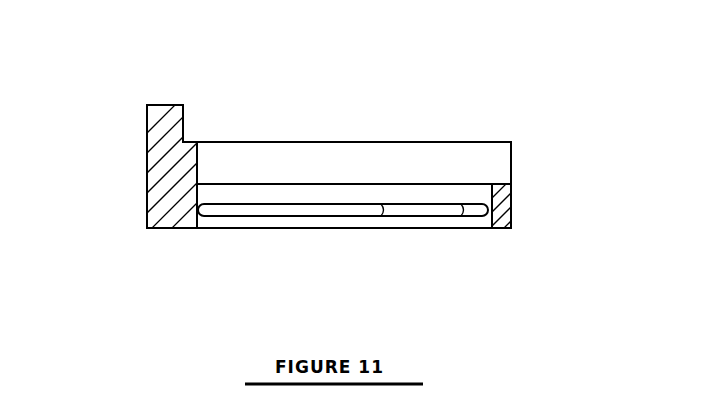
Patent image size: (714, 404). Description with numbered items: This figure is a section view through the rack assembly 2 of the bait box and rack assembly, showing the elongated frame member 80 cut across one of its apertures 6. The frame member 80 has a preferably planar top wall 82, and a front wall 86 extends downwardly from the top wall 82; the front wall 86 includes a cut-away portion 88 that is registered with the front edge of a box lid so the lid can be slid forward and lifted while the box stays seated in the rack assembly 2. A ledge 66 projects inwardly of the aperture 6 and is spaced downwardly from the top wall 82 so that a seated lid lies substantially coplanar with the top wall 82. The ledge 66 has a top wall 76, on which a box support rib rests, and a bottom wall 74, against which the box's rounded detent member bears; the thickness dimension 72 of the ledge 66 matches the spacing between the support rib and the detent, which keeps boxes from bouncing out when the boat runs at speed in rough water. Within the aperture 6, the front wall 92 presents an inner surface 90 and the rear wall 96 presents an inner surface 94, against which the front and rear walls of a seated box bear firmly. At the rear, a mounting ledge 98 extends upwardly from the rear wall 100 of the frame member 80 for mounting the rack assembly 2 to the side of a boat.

The rack assembly 2 is at (147, 117).
The aperture 6 is at (332, 162).
The ledge 66 is at (302, 210).
The thickness dimension 72 is at (467, 212).
The bottom wall 74 is at (255, 218).
The top wall 76 is at (402, 205).
The frame member 80 is at (513, 198).
The top wall 82 is at (268, 142).
The front wall 86 is at (513, 187).
The cut-away portion 88 is at (506, 153).
The inner surface 90 is at (490, 222).
The front wall 92 is at (503, 228).
The inner surface 94 is at (198, 228).
The rear wall 96 is at (167, 228).
The mounting ledge 98 is at (147, 105).
The rear wall 100 is at (147, 148).